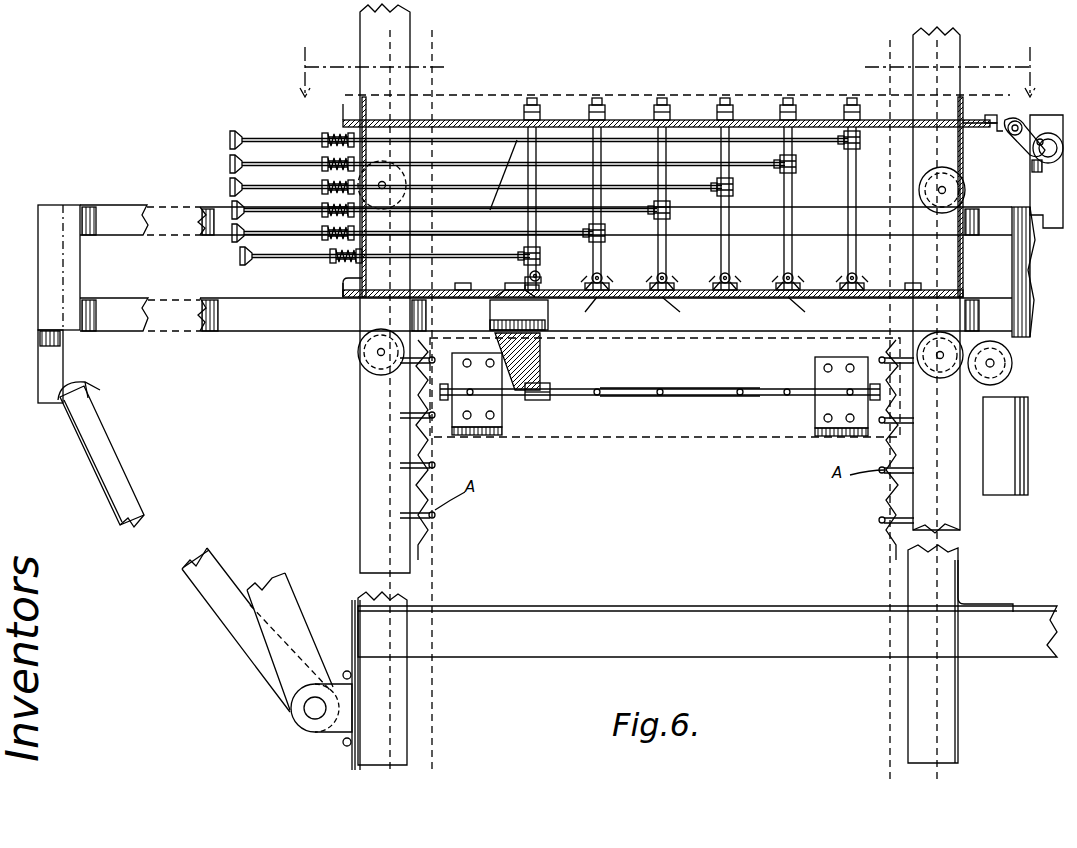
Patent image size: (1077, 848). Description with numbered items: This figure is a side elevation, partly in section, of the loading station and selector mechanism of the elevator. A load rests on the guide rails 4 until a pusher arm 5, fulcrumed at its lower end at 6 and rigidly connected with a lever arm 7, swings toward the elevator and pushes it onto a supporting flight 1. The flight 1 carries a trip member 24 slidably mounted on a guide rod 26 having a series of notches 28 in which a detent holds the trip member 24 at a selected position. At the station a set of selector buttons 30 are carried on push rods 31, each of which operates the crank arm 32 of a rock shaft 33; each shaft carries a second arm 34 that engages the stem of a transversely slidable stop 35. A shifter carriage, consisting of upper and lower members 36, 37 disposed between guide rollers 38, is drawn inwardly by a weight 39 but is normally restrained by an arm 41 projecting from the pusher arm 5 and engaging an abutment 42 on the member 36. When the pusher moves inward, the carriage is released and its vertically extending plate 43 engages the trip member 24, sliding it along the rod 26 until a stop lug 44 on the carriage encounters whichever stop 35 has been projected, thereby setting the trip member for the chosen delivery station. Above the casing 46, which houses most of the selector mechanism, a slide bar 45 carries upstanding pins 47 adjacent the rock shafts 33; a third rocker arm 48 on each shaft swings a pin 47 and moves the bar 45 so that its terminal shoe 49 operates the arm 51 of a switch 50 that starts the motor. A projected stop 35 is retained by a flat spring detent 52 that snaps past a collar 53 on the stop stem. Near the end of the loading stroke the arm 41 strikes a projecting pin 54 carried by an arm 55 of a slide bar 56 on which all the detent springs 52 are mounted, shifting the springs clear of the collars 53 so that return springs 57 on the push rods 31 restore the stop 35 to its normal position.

The supporting flight 1 is at (660, 420).
The guide rails 4 is at (298, 55).
The pusher arm 5 is at (128, 490).
The fulcrum 6 is at (305, 708).
The lever arm 7 is at (295, 610).
The trip member 24 is at (540, 400).
The guide rod 26 is at (612, 398).
The notches 28 is at (665, 390).
The selector buttons 30 is at (228, 187).
The push rod 31 is at (270, 138).
The crank arm 32 is at (798, 164).
The rock shaft 33 is at (905, 105).
The second arm 34 is at (796, 278).
The stop 35 is at (706, 311).
The upper shifter member 36 is at (110, 205).
The lower shifter member 37 is at (118, 320).
The guide rollers 38 is at (960, 186).
The weight 39 is at (1012, 485).
The arm 41 is at (90, 395).
The abutment 42 is at (45, 360).
The plate 43 is at (532, 359).
The stop lug 44 is at (520, 318).
The slide bar 45 is at (480, 118).
The casing 46 is at (965, 258).
The upstanding pins 47 is at (845, 118).
The third rocker arm 48 is at (782, 118).
The terminal shoe 49 is at (992, 115).
The switch 50 is at (1045, 193).
The switch arm 51 is at (1018, 142).
The flat spring detent 52 is at (612, 310).
The collar 53 is at (540, 270).
The projecting pin 54 is at (340, 284).
The arm 55 is at (458, 285).
The slide bar 56 is at (530, 287).
The return springs 57 is at (335, 133).